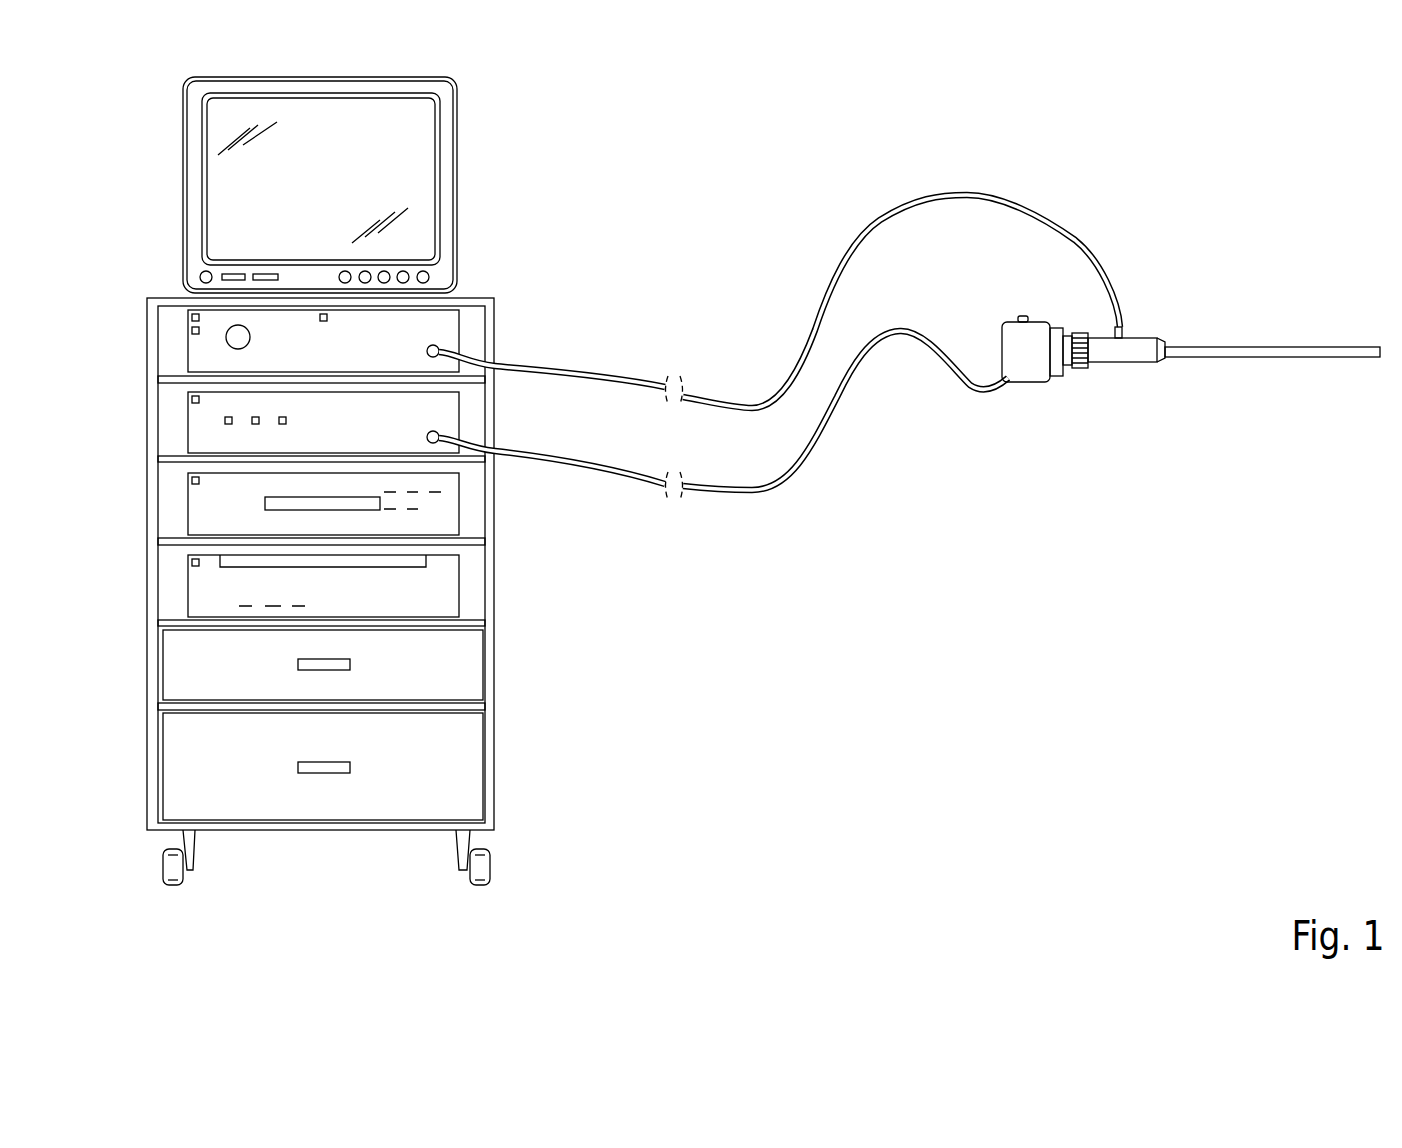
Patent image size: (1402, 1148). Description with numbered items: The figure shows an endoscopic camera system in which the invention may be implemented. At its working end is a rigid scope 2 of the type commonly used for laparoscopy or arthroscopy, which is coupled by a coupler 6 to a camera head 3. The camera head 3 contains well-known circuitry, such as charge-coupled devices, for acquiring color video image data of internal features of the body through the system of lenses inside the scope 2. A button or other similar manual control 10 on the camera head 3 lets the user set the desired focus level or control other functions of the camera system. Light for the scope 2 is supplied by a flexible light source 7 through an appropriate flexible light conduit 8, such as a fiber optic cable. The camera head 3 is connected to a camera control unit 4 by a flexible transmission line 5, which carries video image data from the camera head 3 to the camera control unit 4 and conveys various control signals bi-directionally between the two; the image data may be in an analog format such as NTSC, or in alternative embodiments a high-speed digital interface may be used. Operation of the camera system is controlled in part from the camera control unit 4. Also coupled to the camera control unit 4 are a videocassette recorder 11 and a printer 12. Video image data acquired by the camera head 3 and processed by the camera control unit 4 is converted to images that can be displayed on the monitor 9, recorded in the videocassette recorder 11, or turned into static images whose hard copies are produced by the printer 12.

The rigid scope 2 is at (1248, 343).
The camera head 3 is at (1040, 383).
The camera control unit 4 is at (188, 430).
The flexible transmission line 5 is at (590, 470).
The coupler 6 is at (1090, 370).
The flexible light source 7 is at (188, 333).
The flexible light conduit 8 is at (585, 367).
The monitor 9 is at (457, 150).
The manual control 10 is at (1022, 316).
The videocassette recorder 11 is at (188, 505).
The printer 12 is at (188, 585).